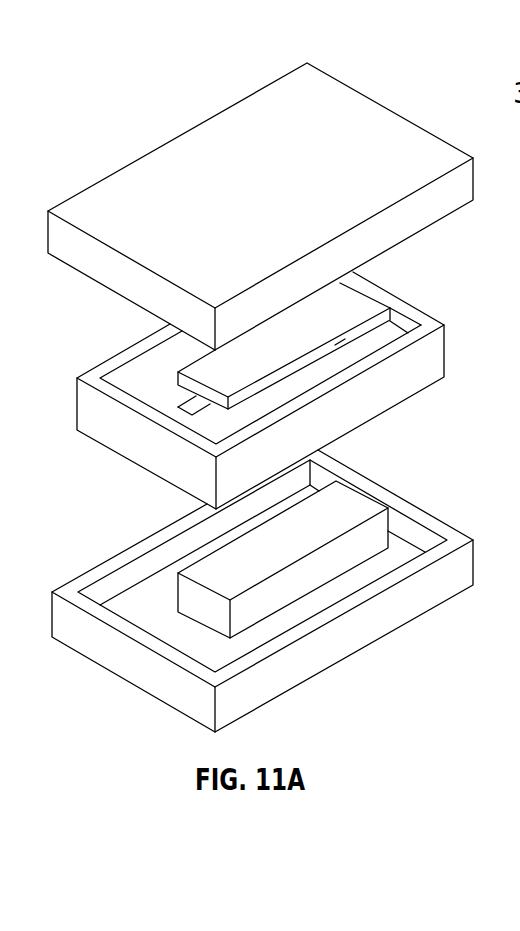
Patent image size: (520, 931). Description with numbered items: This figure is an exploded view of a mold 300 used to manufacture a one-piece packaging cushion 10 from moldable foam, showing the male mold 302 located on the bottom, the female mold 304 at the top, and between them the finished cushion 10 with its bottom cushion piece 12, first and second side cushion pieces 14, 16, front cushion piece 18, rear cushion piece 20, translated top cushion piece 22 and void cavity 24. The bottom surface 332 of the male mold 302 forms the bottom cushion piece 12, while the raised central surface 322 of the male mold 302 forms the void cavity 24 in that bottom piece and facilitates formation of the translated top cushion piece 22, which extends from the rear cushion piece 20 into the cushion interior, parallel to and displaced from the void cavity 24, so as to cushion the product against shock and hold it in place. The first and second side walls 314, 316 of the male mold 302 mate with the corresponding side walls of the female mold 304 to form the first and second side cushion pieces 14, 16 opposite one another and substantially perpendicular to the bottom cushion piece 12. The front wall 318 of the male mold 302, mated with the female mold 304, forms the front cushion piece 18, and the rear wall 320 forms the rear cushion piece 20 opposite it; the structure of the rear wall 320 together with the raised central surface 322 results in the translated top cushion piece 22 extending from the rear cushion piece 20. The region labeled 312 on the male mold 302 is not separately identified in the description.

The electronic device assembly 300 is at (136, 79).
The female mold 304 is at (382, 84).
The packaging cushion 10 is at (385, 268).
The bottom cushion piece 12 is at (157, 403).
The first side cushion piece 14 is at (122, 382).
The second side cushion piece 16 is at (360, 417).
The front cushion piece 18 is at (98, 428).
The rear cushion piece 20 is at (402, 322).
The translated top cushion piece 22 is at (330, 345).
The void cavity 24 is at (204, 424).
The male mold 302 is at (410, 483).
The recess floor 312 is at (132, 603).
The first side wall of the male mold 314 is at (147, 537).
The second side wall of the male mold 316 is at (362, 634).
The front wall of the male mold 318 is at (123, 663).
The rear wall of the male mold 320 is at (417, 528).
The raised central surface of the male mold 322 is at (290, 565).
The bottom surface of the male mold 332 is at (171, 555).